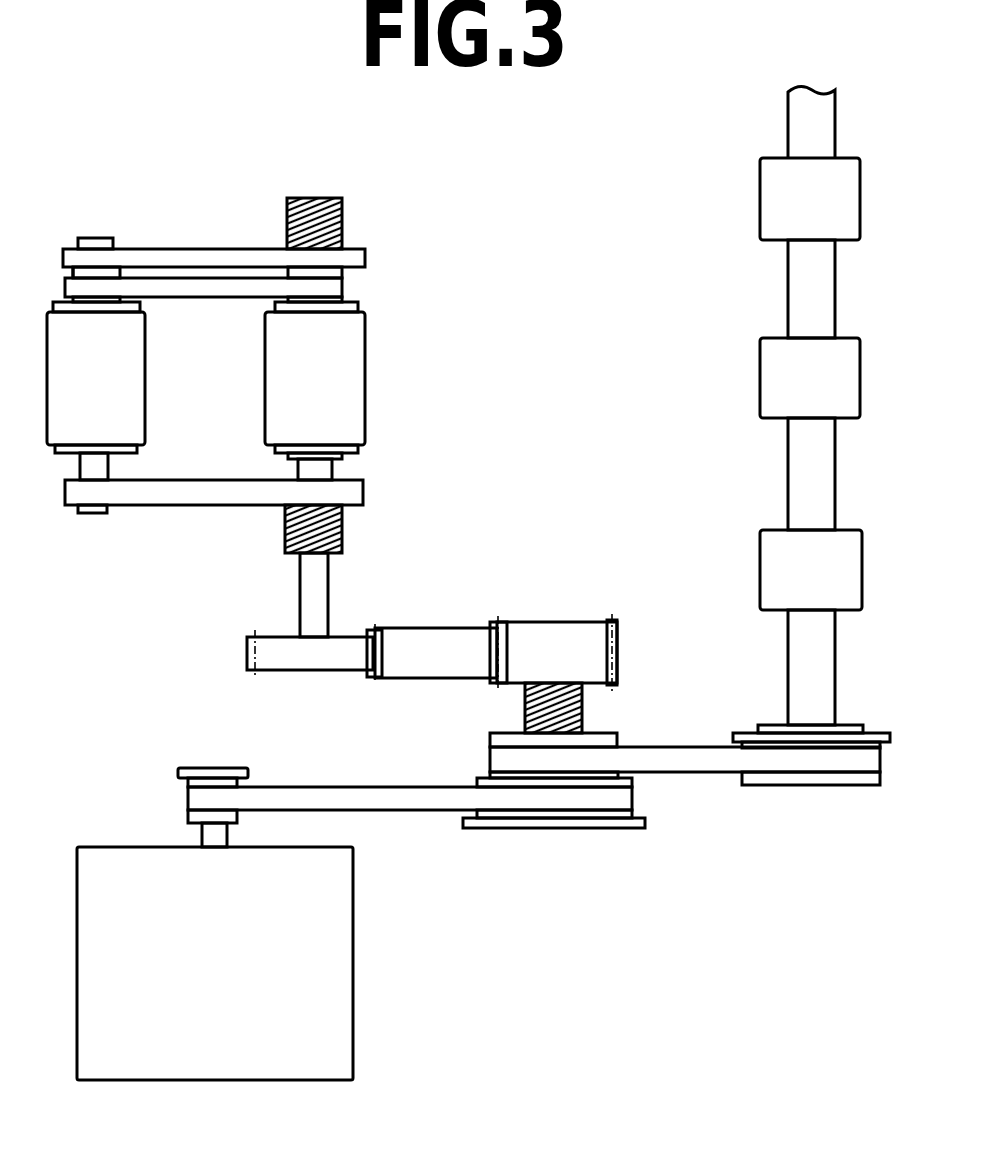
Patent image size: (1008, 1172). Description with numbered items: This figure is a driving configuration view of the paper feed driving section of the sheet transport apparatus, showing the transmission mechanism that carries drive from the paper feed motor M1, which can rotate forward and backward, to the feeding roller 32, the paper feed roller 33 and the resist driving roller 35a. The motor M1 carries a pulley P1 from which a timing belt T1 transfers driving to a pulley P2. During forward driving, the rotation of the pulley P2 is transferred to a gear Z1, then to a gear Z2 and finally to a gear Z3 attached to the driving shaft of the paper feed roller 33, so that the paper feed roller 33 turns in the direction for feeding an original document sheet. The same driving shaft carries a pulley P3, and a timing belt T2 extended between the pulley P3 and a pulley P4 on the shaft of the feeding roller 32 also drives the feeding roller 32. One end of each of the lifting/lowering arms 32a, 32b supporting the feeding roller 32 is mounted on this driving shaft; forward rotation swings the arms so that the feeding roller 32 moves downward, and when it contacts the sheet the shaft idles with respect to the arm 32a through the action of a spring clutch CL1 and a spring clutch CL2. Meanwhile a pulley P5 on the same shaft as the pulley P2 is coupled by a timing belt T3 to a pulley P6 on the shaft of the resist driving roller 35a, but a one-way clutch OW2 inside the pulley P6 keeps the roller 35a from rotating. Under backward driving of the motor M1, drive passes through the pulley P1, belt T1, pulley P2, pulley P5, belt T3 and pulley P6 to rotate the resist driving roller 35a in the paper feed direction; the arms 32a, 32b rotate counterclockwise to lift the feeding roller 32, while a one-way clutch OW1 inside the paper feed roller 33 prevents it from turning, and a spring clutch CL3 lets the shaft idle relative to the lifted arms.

The pulley P4 is at (83, 270).
The lifting/lowering arm 32b is at (183, 258).
The pulley P3 is at (342, 275).
The timing belt T2 is at (212, 290).
The spring clutch CL2 is at (317, 198).
The feeding roller 32 is at (123, 408).
The paper feed roller 33 is at (350, 377).
The one-way clutch OW1 is at (353, 450).
The lifting/lowering arm 32a is at (177, 493).
The spring clutch CL1 is at (342, 530).
The gear Z3 is at (305, 660).
The gear Z2 is at (432, 645).
The gear Z1 is at (560, 635).
The spring clutch CL3 is at (525, 705).
The pulley P5 is at (610, 737).
The timing belt T3 is at (690, 763).
The pulley P2 is at (548, 828).
The timing belt T1 is at (402, 802).
The pulley P1 is at (180, 770).
The paper feed motor M1 is at (333, 980).
The resist driving roller 35a is at (782, 380).
The one-way clutch OW2 is at (763, 725).
The pulley P6 is at (827, 783).